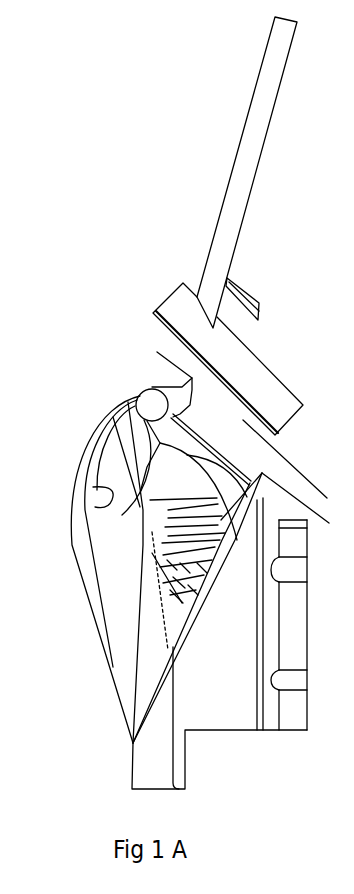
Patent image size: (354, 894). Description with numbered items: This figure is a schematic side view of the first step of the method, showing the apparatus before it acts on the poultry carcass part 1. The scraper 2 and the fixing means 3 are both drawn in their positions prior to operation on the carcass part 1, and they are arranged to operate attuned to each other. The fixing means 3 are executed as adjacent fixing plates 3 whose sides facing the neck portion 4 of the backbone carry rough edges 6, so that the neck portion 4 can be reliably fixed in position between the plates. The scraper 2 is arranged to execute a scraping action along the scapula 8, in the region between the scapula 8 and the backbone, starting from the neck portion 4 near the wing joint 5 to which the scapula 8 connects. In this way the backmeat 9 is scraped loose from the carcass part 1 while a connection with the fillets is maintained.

The carcass part 1 is at (173, 592).
The scraper 2 is at (258, 183).
The fixing means 3 is at (265, 377).
The neck portion 4 is at (157, 352).
The wing joint 5 is at (137, 397).
The rough edges 6 is at (343, 498).
The scapula 8 is at (343, 523).
The backmeat 9 is at (299, 612).